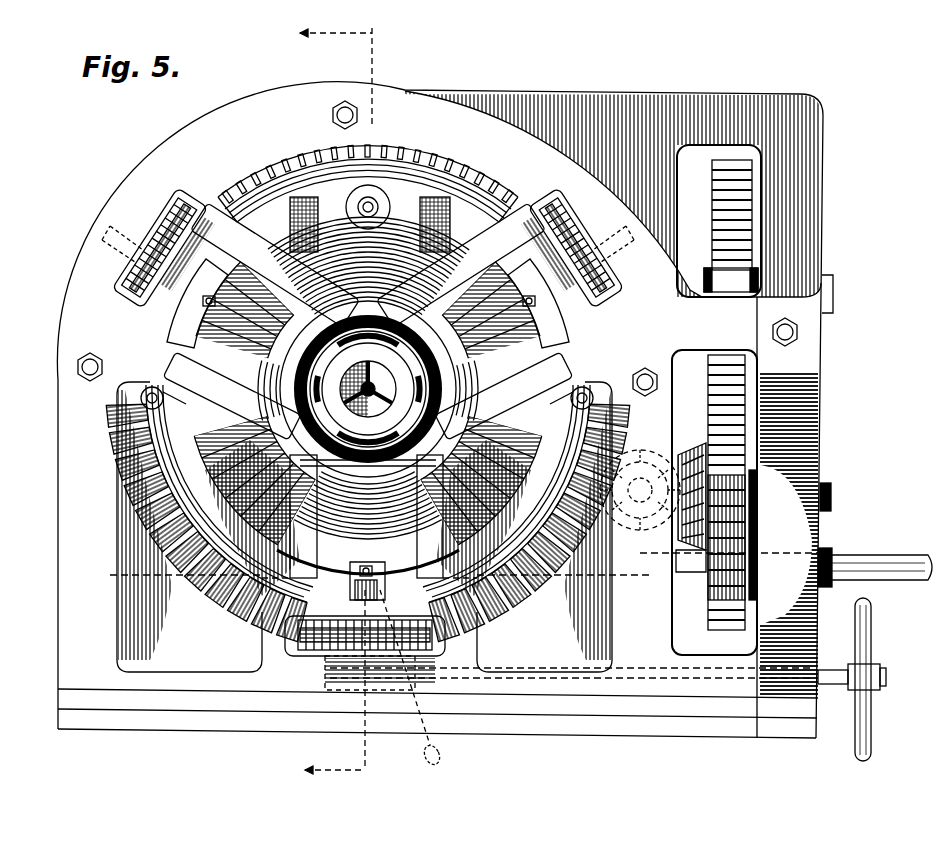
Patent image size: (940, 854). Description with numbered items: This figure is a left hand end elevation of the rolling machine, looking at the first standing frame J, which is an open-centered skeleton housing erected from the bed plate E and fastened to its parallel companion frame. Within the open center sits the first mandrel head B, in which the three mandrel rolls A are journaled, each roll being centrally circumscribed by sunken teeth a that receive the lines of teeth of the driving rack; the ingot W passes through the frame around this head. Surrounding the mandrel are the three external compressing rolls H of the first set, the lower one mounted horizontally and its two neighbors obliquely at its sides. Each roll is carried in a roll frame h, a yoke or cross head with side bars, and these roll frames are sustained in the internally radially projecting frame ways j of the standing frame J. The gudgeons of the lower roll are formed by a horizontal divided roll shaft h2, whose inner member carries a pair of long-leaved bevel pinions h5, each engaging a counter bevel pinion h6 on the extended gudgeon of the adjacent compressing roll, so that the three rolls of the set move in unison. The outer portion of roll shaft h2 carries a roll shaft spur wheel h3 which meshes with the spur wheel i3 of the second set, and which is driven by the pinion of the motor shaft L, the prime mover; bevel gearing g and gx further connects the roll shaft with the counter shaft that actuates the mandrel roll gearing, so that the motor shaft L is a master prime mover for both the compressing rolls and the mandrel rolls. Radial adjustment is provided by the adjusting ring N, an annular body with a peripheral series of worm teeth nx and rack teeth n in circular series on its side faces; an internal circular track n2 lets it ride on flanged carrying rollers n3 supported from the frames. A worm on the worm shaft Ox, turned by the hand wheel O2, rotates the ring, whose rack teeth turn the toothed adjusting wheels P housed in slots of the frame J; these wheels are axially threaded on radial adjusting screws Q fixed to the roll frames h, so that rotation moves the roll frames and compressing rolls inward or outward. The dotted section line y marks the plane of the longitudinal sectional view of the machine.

The housing or standing frame J is at (445, 410).
The frame ways j is at (196, 160).
The external compressing rolls H is at (368, 385).
The ingot W is at (350, 468).
The first mandrel head B is at (368, 389).
The mandrel rolls A is at (363, 398).
The sunken teeth a is at (369, 400).
The internal circular track n2 is at (232, 544).
The flanged carrying rollers n3 is at (367, 303).
The adjusting ring N is at (222, 600).
The rack teeth n is at (262, 564).
The worm teeth nx is at (513, 605).
The toothed adjusting wheel P is at (318, 655).
The radial adjusting screw Q is at (358, 592).
The roll frame h is at (368, 429).
The long-leaved bevel pinions h5 is at (452, 538).
The counter bevel pinion h6 is at (368, 384).
The roll shaft spur wheel i3 is at (712, 183).
The roll shaft spur wheel h3 is at (712, 628).
The bevel gearing g is at (676, 462).
The bevel gearing gx is at (649, 472).
The roll shaft h2 is at (830, 498).
The motor shaft L is at (865, 560).
The hand wheel O2 is at (872, 640).
The worm shaft Ox is at (840, 686).
The bed plate E is at (212, 732).
The section line y– y is at (461, 400).